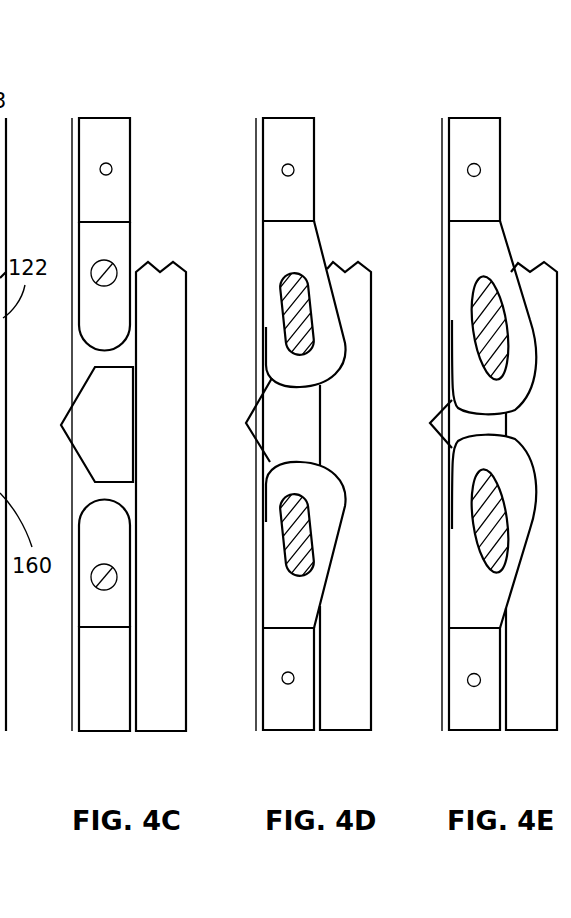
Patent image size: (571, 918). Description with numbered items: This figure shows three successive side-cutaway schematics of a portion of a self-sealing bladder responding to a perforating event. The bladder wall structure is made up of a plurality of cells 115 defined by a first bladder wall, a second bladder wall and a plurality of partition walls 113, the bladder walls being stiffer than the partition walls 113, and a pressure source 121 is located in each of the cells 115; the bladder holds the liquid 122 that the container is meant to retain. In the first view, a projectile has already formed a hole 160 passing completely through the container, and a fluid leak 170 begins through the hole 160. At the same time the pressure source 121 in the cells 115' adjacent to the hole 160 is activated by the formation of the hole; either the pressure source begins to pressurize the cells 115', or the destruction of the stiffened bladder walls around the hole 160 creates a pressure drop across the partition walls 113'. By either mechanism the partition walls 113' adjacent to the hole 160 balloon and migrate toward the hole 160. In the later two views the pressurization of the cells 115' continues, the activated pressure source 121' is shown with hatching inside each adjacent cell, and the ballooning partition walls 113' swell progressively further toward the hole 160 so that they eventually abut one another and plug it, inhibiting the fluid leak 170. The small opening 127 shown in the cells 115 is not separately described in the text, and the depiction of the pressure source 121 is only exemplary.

In FIG. 4D, the partition walls 113 is at (342, 304).
In FIG. 4C, the partition walls adjacent to hole 113' is at (128, 400).
In FIG. 4D, the partition walls adjacent to hole 113' is at (344, 545).
In FIG. 4C, the cells 115 is at (94, 459).
In FIG. 4C, the cells adjacent to hole 115' is at (160, 427).
In FIG. 4C, the pressure source 121 is at (164, 394).
In FIG. 4D, the slot 121' is at (334, 423).
In FIG. 4C, the liquid 122 is at (177, 302).
In FIG. 4C, the pin hole 127 is at (108, 162).
In FIG. 4C, the hole 160 is at (113, 490).
In FIG. 4E, the hole 160 is at (435, 438).
In FIG. 4C, the fluid leak 170 is at (83, 363).